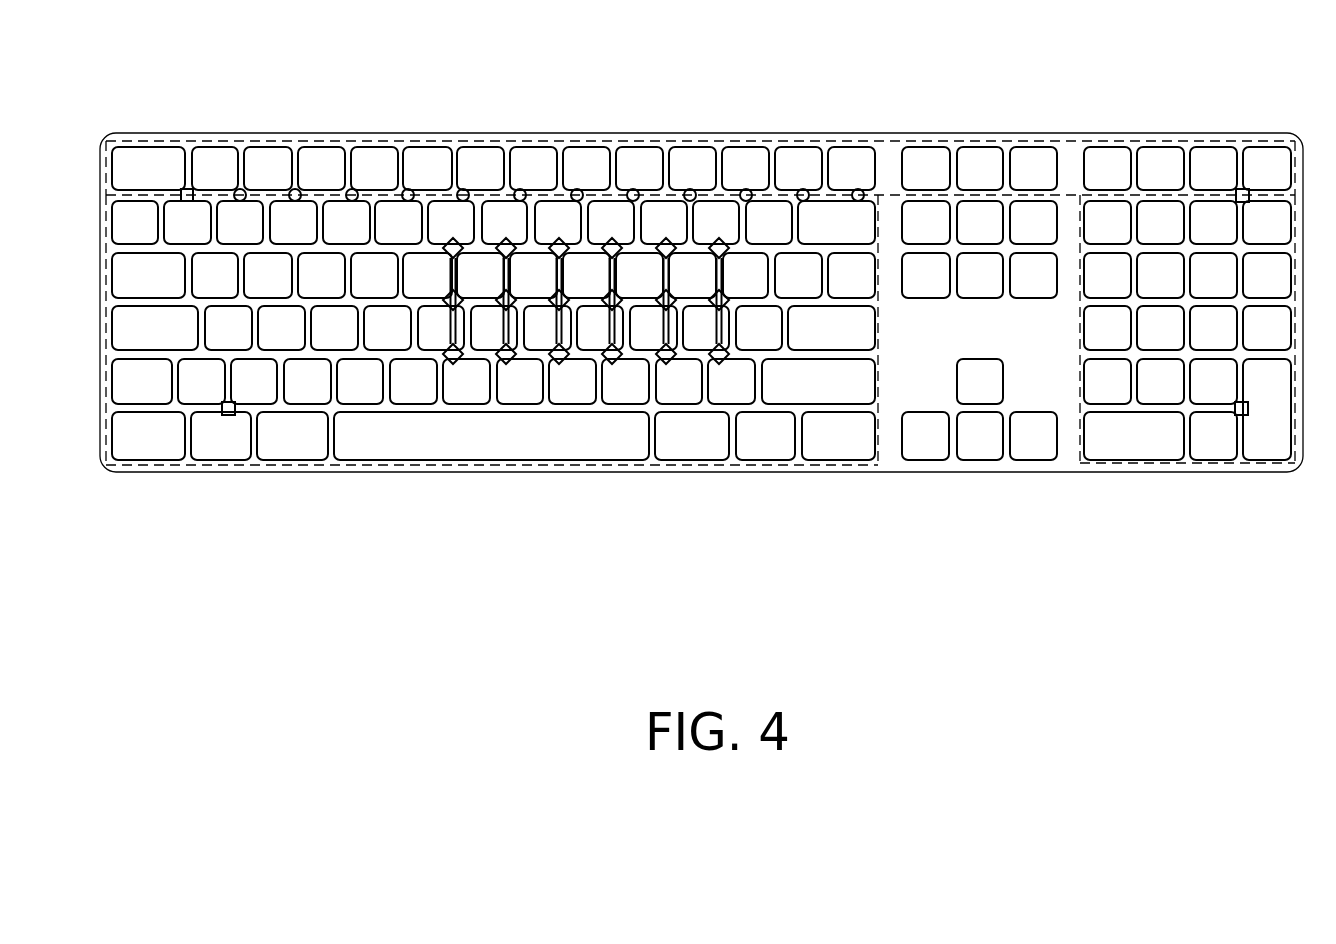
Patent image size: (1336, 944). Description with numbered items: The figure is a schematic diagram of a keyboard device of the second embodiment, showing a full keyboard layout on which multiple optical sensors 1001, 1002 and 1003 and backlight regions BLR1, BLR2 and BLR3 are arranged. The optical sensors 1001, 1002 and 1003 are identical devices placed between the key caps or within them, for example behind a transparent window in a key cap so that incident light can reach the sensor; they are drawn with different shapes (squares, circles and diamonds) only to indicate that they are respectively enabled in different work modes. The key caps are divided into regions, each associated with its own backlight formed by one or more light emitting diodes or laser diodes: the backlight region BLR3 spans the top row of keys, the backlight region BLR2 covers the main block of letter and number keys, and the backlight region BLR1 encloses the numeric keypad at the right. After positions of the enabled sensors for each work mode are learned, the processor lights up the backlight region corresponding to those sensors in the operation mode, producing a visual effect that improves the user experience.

The optical sensor 1001 is at (186, 189).
The optical sensor 1002 is at (242, 190).
The optical sensor 1003 is at (453, 364).
The backlight region BLR1 is at (1195, 467).
The backlight region BLR2 is at (327, 467).
The backlight region BLR3 is at (889, 142).